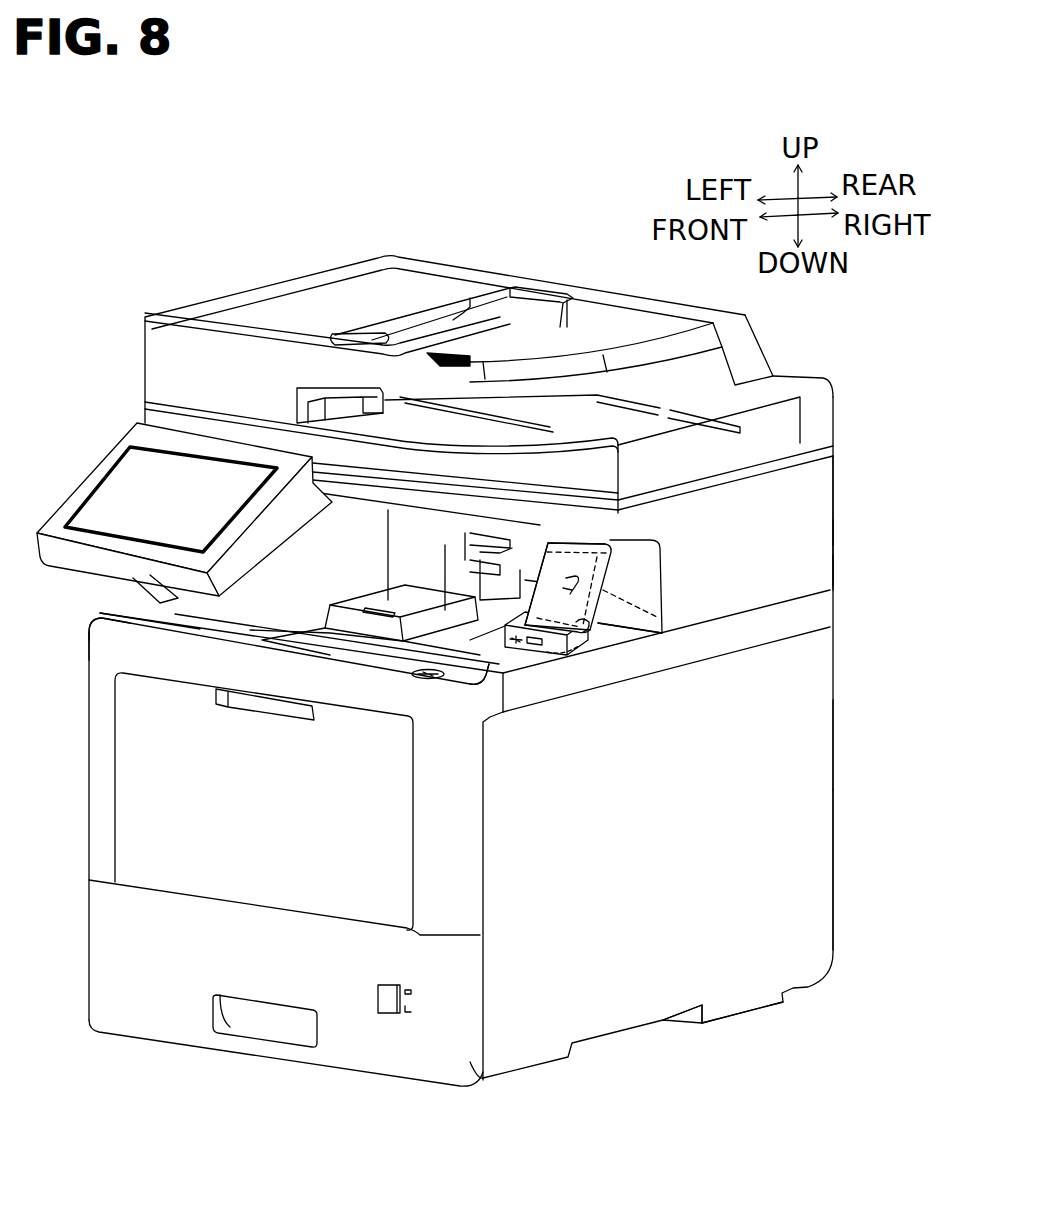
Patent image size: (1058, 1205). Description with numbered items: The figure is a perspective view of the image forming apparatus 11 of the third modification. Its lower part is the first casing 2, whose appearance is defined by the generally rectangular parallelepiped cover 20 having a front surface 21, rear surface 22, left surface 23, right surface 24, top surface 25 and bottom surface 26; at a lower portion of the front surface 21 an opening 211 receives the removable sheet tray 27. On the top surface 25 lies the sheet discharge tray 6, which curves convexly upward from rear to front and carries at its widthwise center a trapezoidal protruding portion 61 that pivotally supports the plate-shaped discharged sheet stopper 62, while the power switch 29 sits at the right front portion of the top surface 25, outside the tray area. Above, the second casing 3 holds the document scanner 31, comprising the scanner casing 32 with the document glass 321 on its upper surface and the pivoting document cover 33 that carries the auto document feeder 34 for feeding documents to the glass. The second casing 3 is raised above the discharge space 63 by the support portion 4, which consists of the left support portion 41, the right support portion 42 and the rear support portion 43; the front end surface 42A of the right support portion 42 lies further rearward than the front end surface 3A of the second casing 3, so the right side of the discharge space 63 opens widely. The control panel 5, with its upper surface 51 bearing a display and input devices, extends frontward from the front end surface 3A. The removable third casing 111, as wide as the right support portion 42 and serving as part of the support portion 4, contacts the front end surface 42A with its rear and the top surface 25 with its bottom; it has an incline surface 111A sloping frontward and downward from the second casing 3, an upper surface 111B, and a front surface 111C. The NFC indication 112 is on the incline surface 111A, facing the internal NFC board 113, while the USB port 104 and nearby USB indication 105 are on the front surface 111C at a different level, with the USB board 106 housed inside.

The image forming apparatus 11 is at (120, 225).
The first casing 2 is at (428, 738).
The cover 20 is at (79, 766).
The front surface 21 is at (100, 815).
The rear surface 22 is at (830, 742).
The left surface 23 is at (87, 683).
The right surface 24 is at (828, 805).
The top surface 25 is at (267, 620).
The bottom surface 26 is at (747, 1013).
The sheet tray 27 is at (135, 1020).
The opening 211 is at (480, 1067).
The power switch 29 is at (482, 662).
The second casing 3 is at (453, 384).
The front end surface 3A is at (520, 508).
The document scanner 31 is at (132, 396).
The scanner casing 32 is at (757, 453).
The document glass 321 is at (820, 437).
The document cover 33 is at (797, 383).
The auto document feeder 34 is at (305, 285).
The support portion 4 is at (852, 532).
The right support portion 42 is at (818, 570).
The front end surface 42A is at (660, 575).
The rear support portion 43 is at (833, 533).
The control panel 5 is at (184, 509).
The upper surface 51 is at (82, 493).
The left support portion 41 is at (168, 592).
The sheet discharge tray 6 is at (370, 595).
The protruding portion 61 is at (449, 633).
The discharged sheet stopper 62 is at (423, 595).
The discharge space 63 is at (357, 546).
The USB port 104 is at (535, 645).
The USB indication 105 is at (520, 645).
The USB board 106 is at (607, 652).
The third casing 111 is at (640, 626).
The incline surface 111A is at (645, 555).
The upper surface 111B is at (598, 622).
The front surface 111C is at (585, 652).
The NFC indication 112 is at (575, 575).
The NFC board 113 is at (657, 627).